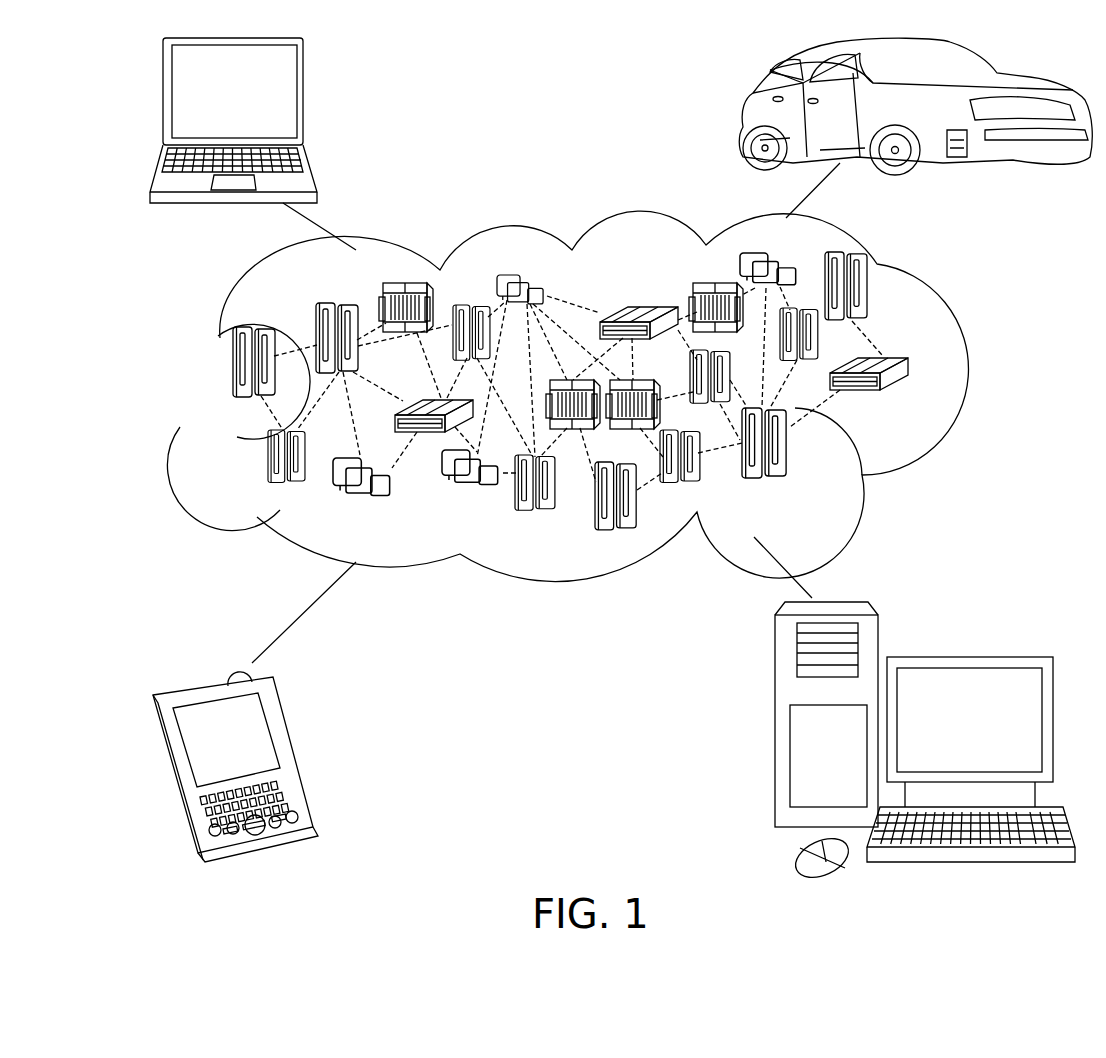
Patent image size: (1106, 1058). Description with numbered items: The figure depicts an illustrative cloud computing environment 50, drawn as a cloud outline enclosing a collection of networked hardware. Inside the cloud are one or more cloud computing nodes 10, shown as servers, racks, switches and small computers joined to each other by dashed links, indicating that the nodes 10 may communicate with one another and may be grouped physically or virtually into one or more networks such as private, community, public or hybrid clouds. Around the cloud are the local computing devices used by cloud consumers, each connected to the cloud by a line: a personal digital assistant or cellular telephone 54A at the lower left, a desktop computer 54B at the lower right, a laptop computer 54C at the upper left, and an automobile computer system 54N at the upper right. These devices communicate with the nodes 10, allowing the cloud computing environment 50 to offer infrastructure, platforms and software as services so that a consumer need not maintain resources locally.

The cloud computing nodes 10 is at (912, 401).
The cloud computing environment 50 is at (968, 370).
The personal digital assistant (PDA) or cellular telephone 54A is at (292, 748).
The desktop computer 54B is at (966, 656).
The laptop computer 54C is at (304, 98).
The automobile computer system 54N is at (743, 118).